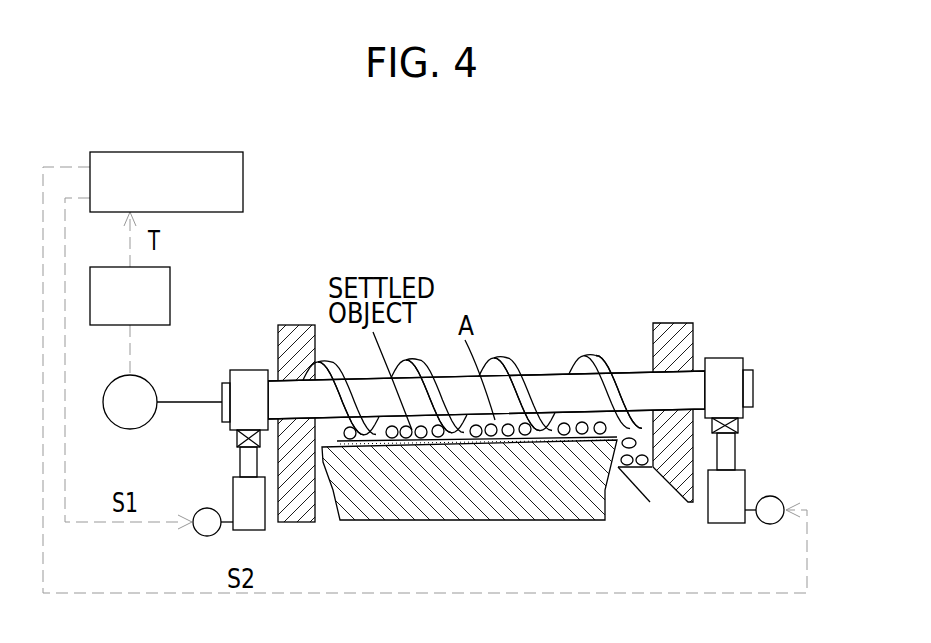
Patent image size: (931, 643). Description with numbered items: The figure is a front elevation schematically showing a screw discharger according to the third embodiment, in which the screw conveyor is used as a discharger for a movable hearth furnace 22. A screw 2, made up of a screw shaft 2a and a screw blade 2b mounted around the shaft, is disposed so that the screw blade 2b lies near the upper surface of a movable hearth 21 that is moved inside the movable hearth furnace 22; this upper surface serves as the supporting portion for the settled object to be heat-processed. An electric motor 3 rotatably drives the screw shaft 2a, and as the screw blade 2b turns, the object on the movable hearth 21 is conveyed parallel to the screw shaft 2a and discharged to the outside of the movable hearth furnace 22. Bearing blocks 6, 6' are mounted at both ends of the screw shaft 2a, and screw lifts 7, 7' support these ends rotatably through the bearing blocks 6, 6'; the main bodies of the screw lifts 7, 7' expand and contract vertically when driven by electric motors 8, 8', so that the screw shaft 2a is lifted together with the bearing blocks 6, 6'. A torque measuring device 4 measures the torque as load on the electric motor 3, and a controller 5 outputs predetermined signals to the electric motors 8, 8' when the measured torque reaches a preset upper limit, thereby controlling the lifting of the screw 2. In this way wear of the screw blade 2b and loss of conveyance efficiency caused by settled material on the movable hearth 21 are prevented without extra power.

The screw 2 is at (591, 286).
The screw shaft 2a is at (548, 373).
The screw blade 2b is at (517, 373).
The electric motor 3 is at (150, 380).
The torque measuring device 4 is at (170, 290).
The controller 5 is at (243, 171).
The bearing block 6 is at (244, 377).
The bearing block 6' is at (764, 384).
The screw lift 7 is at (220, 488).
The screw lift 7' is at (767, 478).
The electric motor 8 is at (196, 537).
The electric motor 8' is at (764, 534).
The movable hearth 21 is at (610, 500).
The movable hearth furnace 22 is at (700, 322).